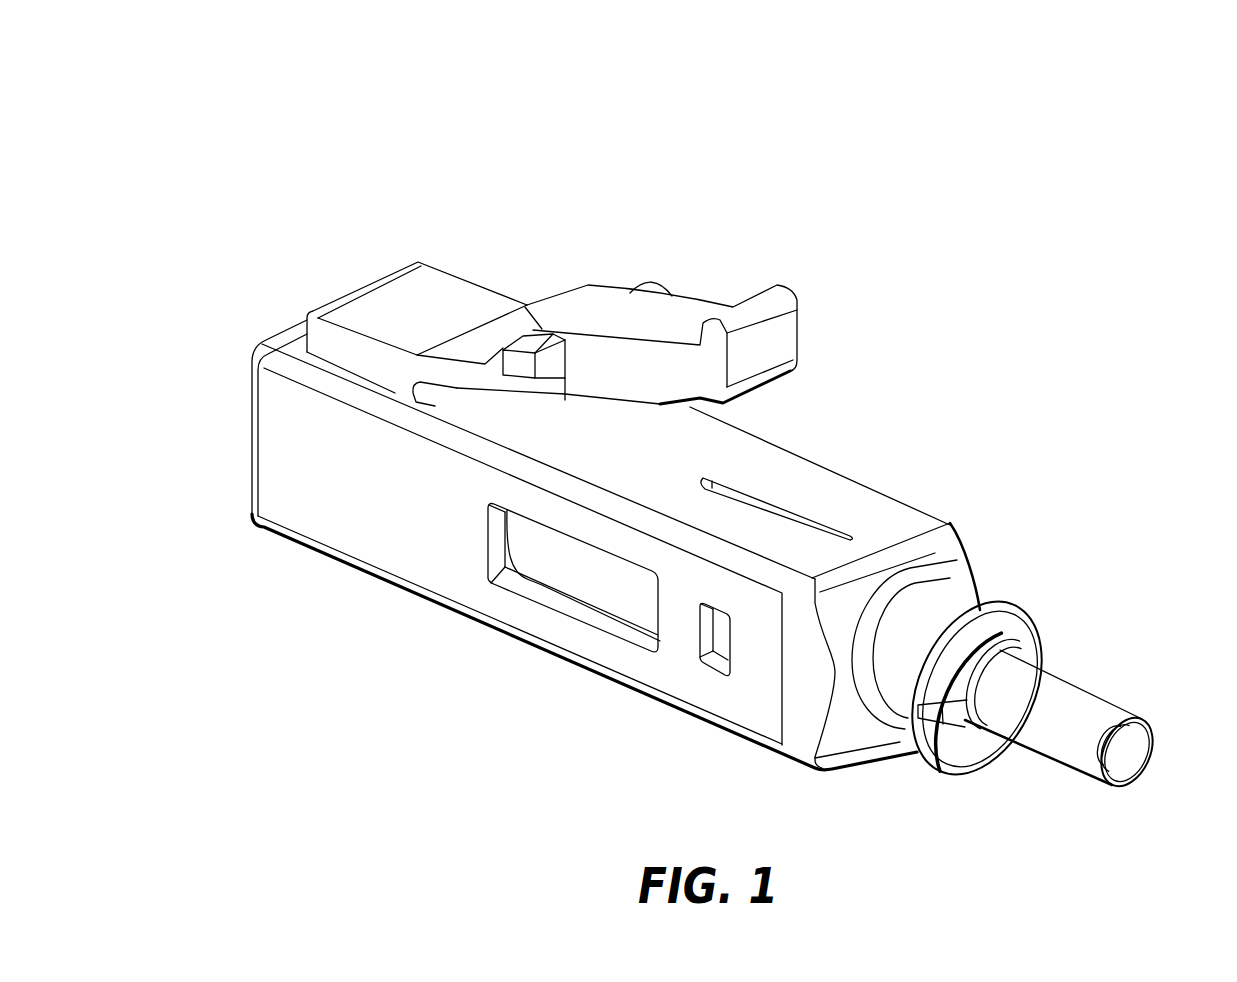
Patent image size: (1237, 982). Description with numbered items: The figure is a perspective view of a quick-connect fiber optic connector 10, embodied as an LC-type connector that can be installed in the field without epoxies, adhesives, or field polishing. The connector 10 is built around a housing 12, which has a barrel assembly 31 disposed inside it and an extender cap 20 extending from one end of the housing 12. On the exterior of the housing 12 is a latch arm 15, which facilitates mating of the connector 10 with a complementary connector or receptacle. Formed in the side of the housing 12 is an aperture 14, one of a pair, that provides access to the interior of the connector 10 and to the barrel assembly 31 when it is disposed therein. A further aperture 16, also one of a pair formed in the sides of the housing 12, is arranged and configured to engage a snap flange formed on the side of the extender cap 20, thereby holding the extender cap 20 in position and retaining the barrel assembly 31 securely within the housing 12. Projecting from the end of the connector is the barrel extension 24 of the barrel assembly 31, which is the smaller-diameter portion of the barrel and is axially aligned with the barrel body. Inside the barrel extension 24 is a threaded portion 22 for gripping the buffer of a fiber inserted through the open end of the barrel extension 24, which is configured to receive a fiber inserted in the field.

The quick-connect fiber optic connector 10 is at (530, 172).
The housing 12 is at (417, 543).
The aperture 14 is at (610, 617).
The latch arm 15 is at (642, 322).
The aperture 16 is at (715, 662).
The extender cap 20 is at (922, 537).
The threaded portion 22 is at (1137, 755).
The barrel extension 24 is at (1057, 725).
The barrel assembly 31 is at (575, 554).